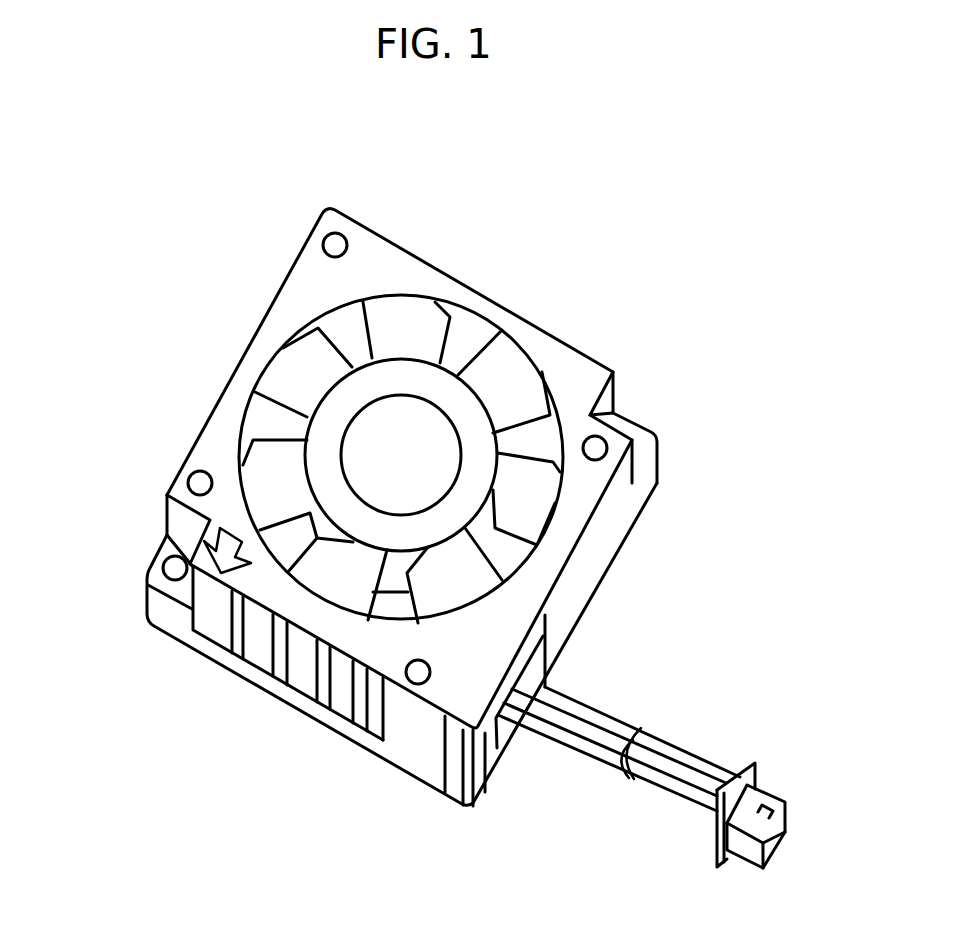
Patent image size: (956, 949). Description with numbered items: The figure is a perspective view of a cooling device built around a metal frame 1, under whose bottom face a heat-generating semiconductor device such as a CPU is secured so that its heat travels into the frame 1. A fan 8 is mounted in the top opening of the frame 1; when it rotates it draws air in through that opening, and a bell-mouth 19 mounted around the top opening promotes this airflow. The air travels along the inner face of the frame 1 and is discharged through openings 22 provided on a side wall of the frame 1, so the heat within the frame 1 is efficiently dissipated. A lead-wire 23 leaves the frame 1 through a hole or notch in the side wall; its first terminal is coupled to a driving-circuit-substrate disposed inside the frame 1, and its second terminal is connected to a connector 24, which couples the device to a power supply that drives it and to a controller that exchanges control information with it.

The frame 1 is at (418, 745).
The bell-mouth 19 is at (315, 288).
The fan 8 is at (405, 333).
The openings 22 is at (263, 637).
The lead-wire 23 is at (695, 762).
The connector 24 is at (760, 805).